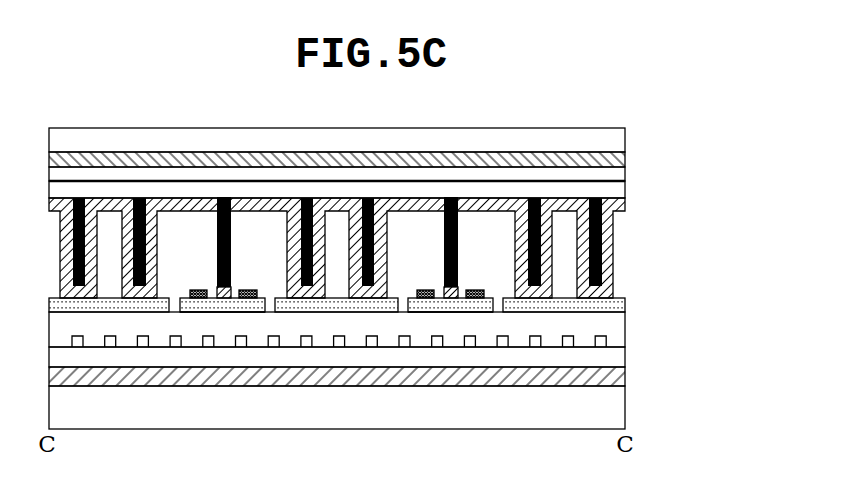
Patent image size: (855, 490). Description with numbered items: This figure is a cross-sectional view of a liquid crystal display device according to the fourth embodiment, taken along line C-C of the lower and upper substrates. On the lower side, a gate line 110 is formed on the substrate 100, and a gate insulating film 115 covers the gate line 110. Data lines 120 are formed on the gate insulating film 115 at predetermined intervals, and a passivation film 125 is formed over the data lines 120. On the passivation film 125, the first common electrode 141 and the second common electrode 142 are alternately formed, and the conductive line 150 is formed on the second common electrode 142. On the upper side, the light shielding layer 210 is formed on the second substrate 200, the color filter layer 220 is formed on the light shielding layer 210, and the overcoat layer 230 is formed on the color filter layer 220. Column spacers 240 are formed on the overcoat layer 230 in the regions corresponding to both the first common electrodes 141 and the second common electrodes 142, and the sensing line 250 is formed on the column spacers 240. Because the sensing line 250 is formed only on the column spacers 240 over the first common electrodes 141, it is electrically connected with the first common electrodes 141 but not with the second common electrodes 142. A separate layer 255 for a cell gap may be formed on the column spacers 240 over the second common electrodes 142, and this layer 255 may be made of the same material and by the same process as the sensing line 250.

The substrate 100 is at (620, 408).
The gate line 110 is at (620, 376).
The gate insulating film 115 is at (620, 358).
The data lines 120 is at (605, 342).
The passivation film 125 is at (620, 322).
The first common electrode 141 is at (622, 302).
The second common electrode 142 is at (220, 307).
The conductive line 150 is at (198, 300).
The second substrate 200 is at (620, 143).
The light shielding layer 210 is at (622, 159).
The color filter layer 220 is at (622, 175).
The overcoat layer 230 is at (620, 190).
The column spacers 240 is at (602, 241).
The sensing line 250 is at (607, 270).
The layer for cell gap 255 is at (227, 298).